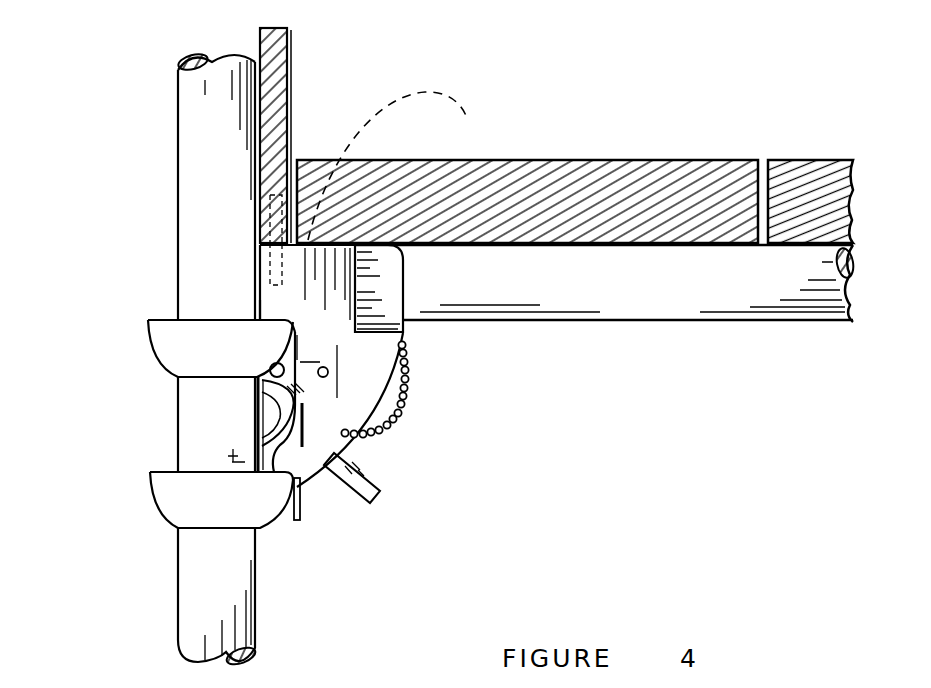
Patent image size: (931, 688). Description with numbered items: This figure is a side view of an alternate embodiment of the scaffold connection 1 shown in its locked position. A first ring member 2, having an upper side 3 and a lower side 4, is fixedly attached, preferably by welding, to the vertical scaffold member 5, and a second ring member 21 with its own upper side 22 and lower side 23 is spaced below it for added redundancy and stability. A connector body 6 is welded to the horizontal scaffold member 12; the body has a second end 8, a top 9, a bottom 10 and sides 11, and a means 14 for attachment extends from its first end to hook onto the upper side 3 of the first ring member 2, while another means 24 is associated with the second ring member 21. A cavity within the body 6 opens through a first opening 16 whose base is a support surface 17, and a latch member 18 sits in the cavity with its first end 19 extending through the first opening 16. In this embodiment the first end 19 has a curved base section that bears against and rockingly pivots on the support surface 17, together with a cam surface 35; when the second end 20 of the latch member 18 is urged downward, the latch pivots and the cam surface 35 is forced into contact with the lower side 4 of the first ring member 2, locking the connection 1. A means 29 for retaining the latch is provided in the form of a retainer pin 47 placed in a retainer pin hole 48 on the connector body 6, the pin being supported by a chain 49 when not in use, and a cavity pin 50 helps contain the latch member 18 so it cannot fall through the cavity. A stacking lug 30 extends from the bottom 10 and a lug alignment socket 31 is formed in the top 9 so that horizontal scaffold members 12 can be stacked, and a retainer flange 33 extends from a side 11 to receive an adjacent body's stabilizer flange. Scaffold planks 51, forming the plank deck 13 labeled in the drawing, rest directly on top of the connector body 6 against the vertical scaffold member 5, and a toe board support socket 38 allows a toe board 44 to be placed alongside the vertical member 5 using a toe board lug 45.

The scaffold connection 1 is at (486, 433).
The first ring member 2 is at (147, 332).
The upper side 3 is at (164, 316).
The lower side 4 is at (158, 371).
The vertical scaffold member 5 is at (250, 620).
The connector body 6 is at (410, 336).
The second end 8 is at (359, 455).
The top 9 is at (345, 240).
The bottom 10 is at (311, 487).
The sides 11 is at (317, 349).
The horizontal scaffold member 12 is at (769, 313).
The deck plank 13 is at (608, 243).
The means for attachment 14 is at (256, 303).
The first opening 16 is at (276, 406).
The support surface 17 is at (265, 427).
The latch member 18 is at (275, 398).
The first end 19 is at (258, 375).
The second end 20 is at (371, 497).
The second ring member 21 is at (147, 492).
The upper side 22 is at (158, 469).
The lower side 23 is at (160, 521).
The means 24 is at (268, 477).
The means for retaining 29 is at (354, 425).
The stacking lug 30 is at (297, 520).
The lug alignment socket 31 is at (396, 166).
The retainer flange 33 is at (356, 288).
The cam surface 35 is at (284, 363).
The toe board support socket 38 is at (270, 268).
The toe board 44 is at (288, 90).
The toe board lug 45 is at (290, 153).
The retainer pin 47 is at (345, 430).
The retainer pin hole 48 is at (340, 432).
The chain 49 is at (411, 405).
The cavity pin 50 is at (328, 367).
The scaffold plank 51 is at (533, 170).